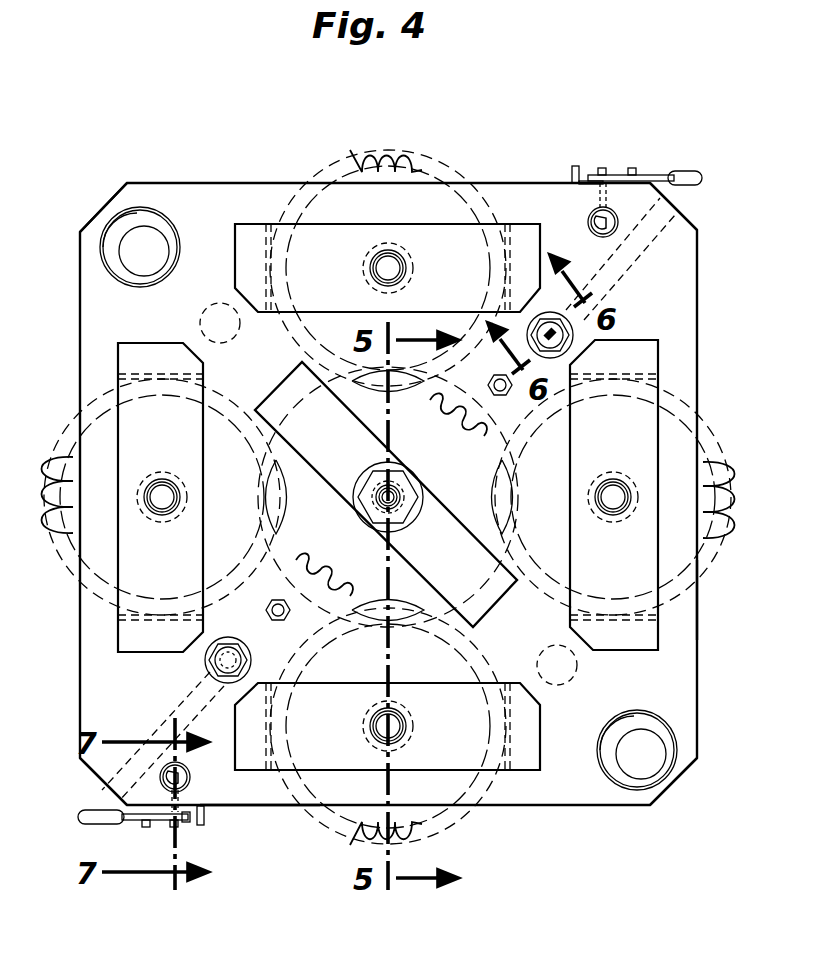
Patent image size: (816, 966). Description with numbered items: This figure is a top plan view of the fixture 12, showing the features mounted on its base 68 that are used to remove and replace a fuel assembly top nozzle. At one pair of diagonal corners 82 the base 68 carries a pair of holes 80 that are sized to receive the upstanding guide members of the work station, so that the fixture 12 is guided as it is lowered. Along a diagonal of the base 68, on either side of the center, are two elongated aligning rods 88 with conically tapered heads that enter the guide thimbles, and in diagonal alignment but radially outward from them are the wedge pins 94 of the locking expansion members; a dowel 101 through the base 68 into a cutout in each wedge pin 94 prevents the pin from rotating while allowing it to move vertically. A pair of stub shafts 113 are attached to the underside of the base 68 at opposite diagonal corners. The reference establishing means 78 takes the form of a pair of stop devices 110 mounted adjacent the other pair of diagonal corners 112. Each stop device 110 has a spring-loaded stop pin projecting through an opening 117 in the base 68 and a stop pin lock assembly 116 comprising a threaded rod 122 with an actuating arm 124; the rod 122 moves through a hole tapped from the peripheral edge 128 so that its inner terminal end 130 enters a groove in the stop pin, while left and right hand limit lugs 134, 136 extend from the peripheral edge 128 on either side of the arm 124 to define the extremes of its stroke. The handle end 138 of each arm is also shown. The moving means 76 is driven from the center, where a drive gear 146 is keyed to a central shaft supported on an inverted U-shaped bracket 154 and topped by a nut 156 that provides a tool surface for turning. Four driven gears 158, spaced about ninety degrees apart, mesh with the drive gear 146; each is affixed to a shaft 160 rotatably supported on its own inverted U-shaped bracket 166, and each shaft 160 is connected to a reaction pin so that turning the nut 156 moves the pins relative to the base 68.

The fixture 12 is at (702, 610).
The base 68 is at (698, 282).
The moving means 76 is at (576, 752).
The reference establishing means 78 is at (399, 492).
The holes 80 is at (158, 234).
The diagonal corners 82 is at (96, 224).
The elongated rods 88 is at (487, 388).
The wedge pin 94 is at (572, 340).
The dowel 101 is at (610, 332).
The stop devices 110 is at (650, 172).
The diagonal corners 112 is at (674, 204).
The stub shafts 113 is at (201, 318).
The stop pin lock assembly 116 is at (580, 174).
The opening 117 is at (606, 218).
The threaded rod 122 is at (590, 185).
The actuating arm 124 is at (604, 168).
The peripheral edge 128 is at (262, 806).
The inner terminal end 130 is at (589, 228).
The left hand limit lug 134 is at (634, 168).
The right hand limit lug 136 is at (570, 178).
The handle grip 138 is at (706, 178).
The drive gear 146 is at (300, 585).
The inverted U-shaped bracket 154 is at (353, 528).
The nut 156 is at (411, 512).
The driven gears 158 is at (358, 165).
The shaft 160 is at (400, 267).
The inverted U-shaped bracket 166 is at (366, 226).